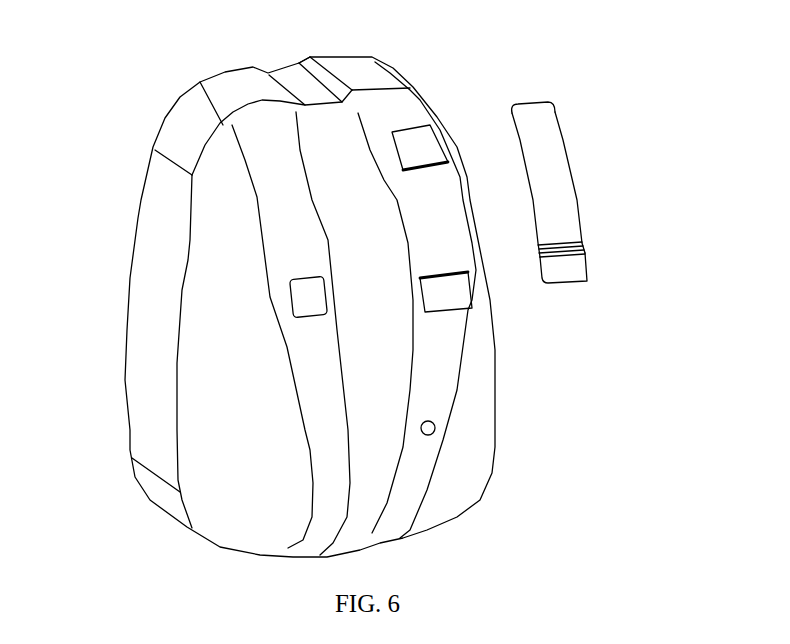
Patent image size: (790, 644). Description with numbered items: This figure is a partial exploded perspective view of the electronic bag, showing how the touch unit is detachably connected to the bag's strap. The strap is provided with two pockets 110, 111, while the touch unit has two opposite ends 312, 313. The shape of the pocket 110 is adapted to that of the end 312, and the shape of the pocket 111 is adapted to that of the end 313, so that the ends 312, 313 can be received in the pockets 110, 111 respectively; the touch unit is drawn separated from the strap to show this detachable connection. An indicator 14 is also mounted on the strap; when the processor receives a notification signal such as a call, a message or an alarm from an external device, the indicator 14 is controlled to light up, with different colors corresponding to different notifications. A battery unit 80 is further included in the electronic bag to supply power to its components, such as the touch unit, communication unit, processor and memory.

The indicator 14 is at (437, 425).
The battery unit 80 is at (300, 298).
The pocket 110 is at (423, 150).
The pocket 111 is at (452, 298).
The end 312 is at (532, 105).
The end 313 is at (552, 288).